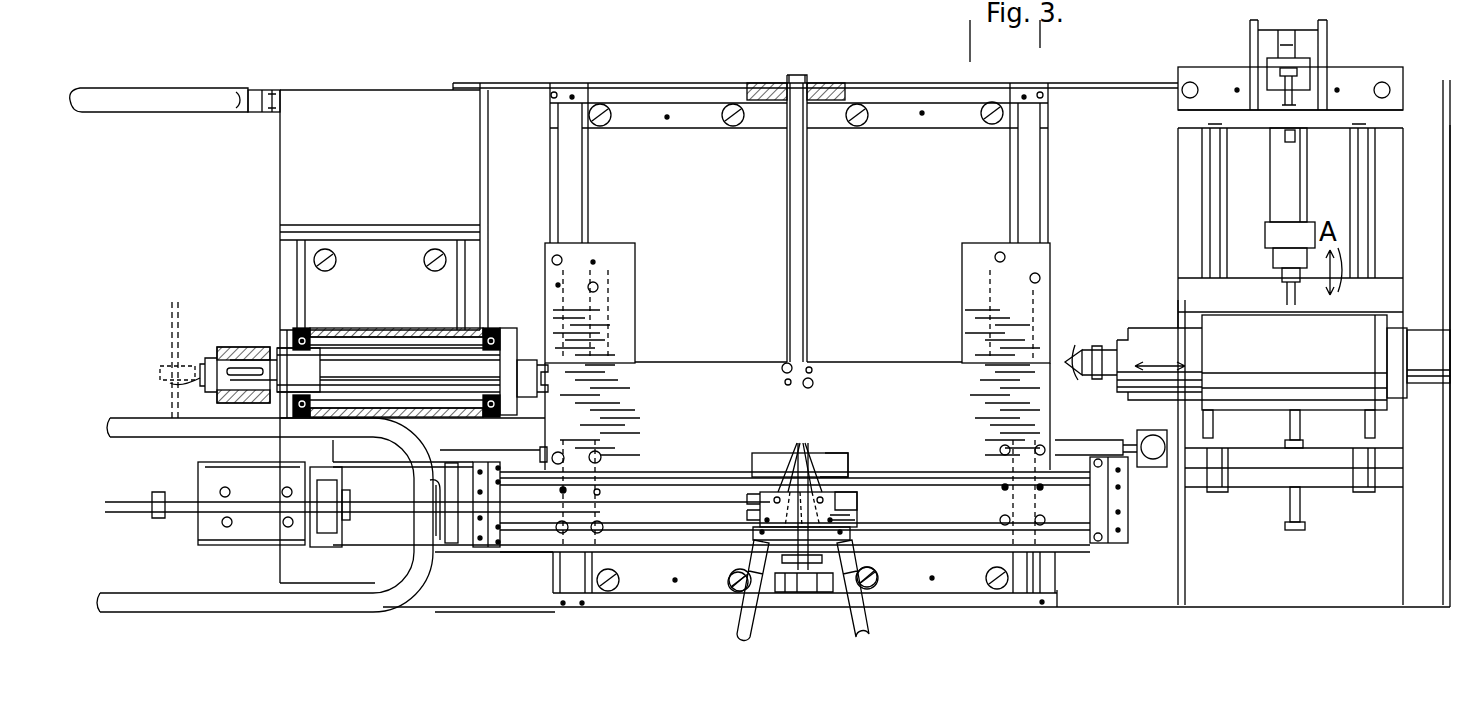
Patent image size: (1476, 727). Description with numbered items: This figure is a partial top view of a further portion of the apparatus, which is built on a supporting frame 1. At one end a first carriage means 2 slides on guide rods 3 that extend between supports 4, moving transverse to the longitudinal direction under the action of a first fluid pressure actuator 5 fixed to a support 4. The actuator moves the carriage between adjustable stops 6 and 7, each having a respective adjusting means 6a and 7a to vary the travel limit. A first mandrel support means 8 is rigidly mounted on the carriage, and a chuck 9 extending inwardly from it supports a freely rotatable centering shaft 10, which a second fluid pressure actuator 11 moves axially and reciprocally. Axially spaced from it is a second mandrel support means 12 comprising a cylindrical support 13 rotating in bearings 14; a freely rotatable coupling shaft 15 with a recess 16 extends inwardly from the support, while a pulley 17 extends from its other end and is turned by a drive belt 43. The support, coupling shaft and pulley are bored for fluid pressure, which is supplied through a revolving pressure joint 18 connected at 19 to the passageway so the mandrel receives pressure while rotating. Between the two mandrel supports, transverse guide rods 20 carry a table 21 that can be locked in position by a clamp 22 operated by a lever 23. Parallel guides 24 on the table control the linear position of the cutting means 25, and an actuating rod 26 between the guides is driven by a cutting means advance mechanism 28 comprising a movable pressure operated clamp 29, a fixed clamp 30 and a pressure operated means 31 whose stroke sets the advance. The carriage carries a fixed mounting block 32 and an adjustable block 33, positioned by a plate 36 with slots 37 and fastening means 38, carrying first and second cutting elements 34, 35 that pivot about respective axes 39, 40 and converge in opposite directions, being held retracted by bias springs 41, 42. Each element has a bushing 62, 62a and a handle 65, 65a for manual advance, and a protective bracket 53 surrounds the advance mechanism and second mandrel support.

The supporting frame 1 is at (1422, 590).
The first carriage means 2 is at (1180, 288).
The guide rods 3 is at (1225, 207).
The supports 4 is at (1392, 478).
The first fluid pressure actuator 5 is at (1272, 165).
The adjustable stop 6 is at (1285, 143).
The adjusting means 6a is at (1290, 88).
The adjustable stop 7 is at (1290, 428).
The adjusting means 7a is at (1290, 508).
The first mandrel support means 8 is at (1300, 366).
The chuck 9 is at (1138, 330).
The centering shaft 10 is at (1083, 355).
The second fluid pressure actuator 11 is at (1437, 385).
The second mandrel support means 12 is at (370, 335).
The cylindrical support 13 is at (341, 347).
The bearings 14 is at (308, 330).
The coupling shaft 15 is at (523, 340).
The recess 16 is at (530, 395).
The pulley 17 is at (210, 350).
The revolving pressure joint 18 is at (160, 370).
The connection 19 is at (198, 380).
The guide rods 20 is at (590, 198).
The table 21 is at (726, 353).
The clamp 22 is at (540, 452).
The lever 23 is at (1152, 465).
The parallel guides 24 is at (655, 472).
The cutting means 25 is at (877, 444).
The actuating rod 26 is at (125, 500).
The cutting means advance mechanism 28 is at (492, 553).
The pressure operated clamp 29 is at (327, 535).
The pressure operated clamp 30 is at (432, 545).
The pressure operated means 31 is at (215, 548).
The mounting block 32 is at (757, 453).
The mounting block 33 is at (835, 455).
The first cutting element 34 is at (797, 443).
The second cutting element 35 is at (806, 445).
The plate 36 is at (870, 520).
The slots 37 is at (865, 485).
The fastening means 38 is at (852, 537).
The pivot axis 39 is at (760, 537).
The pivot axis 40 is at (860, 503).
The bias spring 41 is at (800, 592).
The bias spring 42 is at (860, 560).
The drive belt 43 is at (243, 345).
The protective bracket 53 is at (158, 96).
The bushing 62 is at (752, 558).
The bushing 62a is at (832, 592).
The handle 65 is at (745, 632).
The handle 65a is at (865, 628).